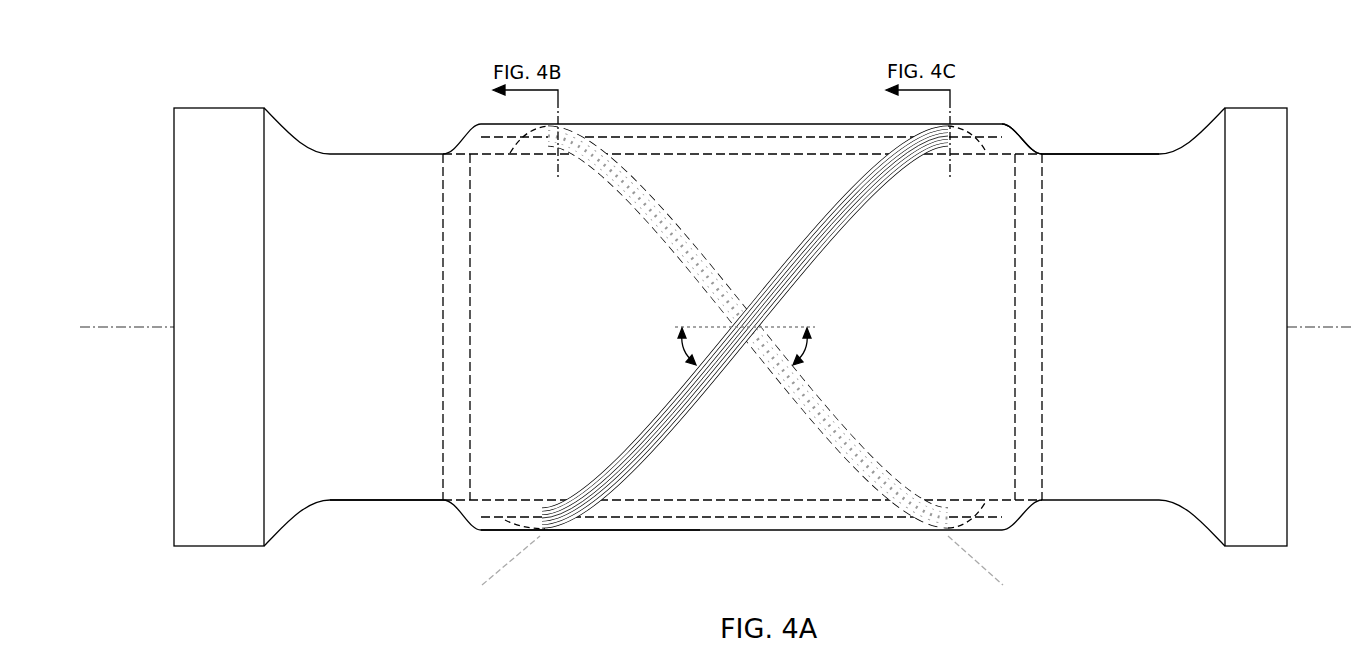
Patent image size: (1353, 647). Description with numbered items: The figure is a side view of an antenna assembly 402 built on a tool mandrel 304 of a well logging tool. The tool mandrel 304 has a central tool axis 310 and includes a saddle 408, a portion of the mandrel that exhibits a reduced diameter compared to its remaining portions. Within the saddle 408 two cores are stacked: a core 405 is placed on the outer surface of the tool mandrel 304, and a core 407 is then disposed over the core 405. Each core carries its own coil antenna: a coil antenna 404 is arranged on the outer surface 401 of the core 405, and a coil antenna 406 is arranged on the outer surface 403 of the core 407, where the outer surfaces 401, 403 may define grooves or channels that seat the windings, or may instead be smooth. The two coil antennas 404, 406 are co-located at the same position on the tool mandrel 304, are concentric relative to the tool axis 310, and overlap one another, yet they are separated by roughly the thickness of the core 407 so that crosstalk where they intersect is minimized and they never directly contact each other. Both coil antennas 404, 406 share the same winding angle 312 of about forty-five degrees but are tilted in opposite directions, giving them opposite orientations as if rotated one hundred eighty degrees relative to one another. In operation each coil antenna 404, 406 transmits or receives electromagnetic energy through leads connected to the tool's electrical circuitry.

The tool mandrel 304 is at (1252, 108).
The tool axis 310 is at (131, 327).
The winding angle 312 is at (690, 359).
The outer surface 401 is at (668, 518).
The antenna assembly 402 is at (466, 52).
The outer surface 403 is at (618, 531).
The coil antenna 404 is at (624, 178).
The core 405 is at (1021, 145).
The coil antenna 406 is at (851, 180).
The core 407 is at (992, 124).
The saddle 408 is at (392, 500).